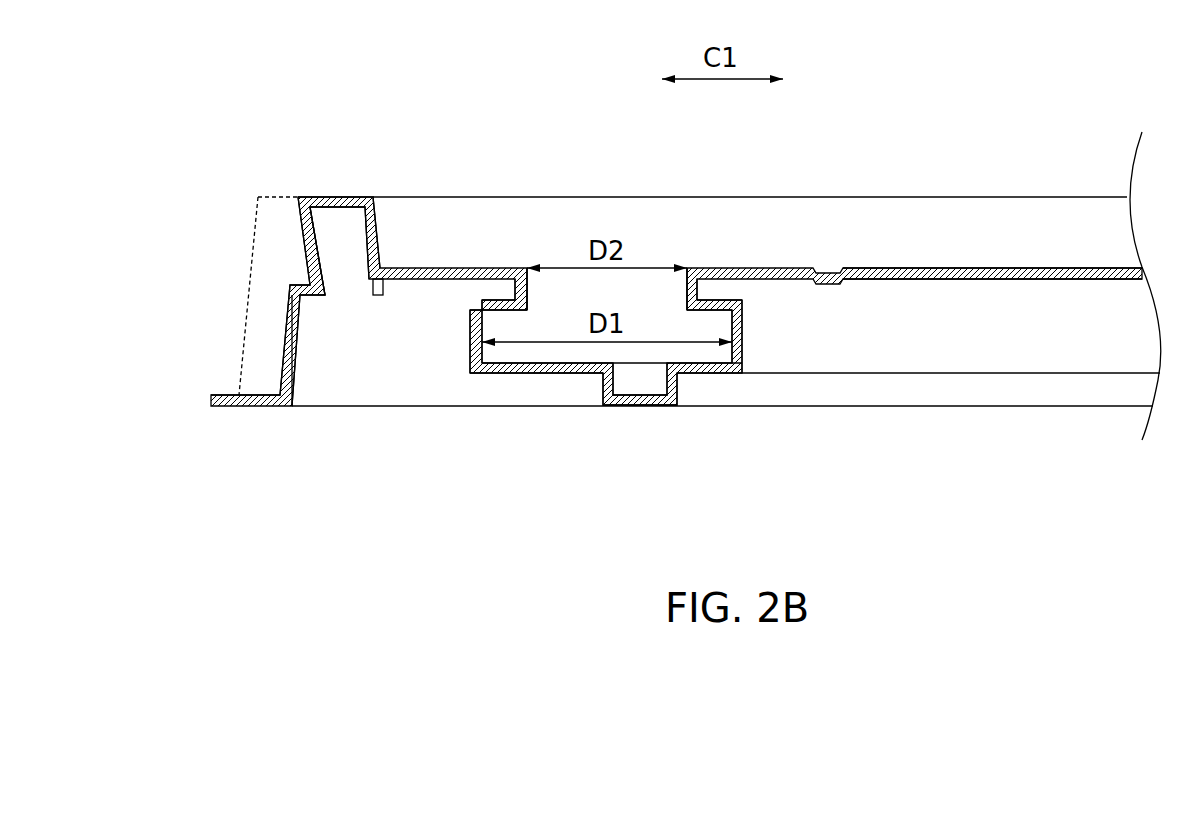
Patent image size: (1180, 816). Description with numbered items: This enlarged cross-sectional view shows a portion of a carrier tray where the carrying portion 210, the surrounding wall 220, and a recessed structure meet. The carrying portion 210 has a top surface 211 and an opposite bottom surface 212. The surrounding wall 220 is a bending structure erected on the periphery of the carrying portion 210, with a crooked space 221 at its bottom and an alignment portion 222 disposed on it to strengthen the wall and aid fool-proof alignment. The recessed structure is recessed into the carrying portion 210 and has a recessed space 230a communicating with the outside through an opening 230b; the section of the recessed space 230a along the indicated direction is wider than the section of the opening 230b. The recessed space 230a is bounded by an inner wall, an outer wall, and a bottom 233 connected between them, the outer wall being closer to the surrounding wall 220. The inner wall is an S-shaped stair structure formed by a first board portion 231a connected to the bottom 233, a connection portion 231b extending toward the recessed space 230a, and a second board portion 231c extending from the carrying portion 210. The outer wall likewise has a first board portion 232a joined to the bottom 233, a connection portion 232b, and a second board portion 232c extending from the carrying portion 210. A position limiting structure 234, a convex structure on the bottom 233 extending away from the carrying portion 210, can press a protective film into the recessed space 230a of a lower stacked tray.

The carrying portion 210 is at (743, 270).
The top surface 211 is at (923, 268).
The bottom surface 212 is at (1040, 278).
The surrounding wall 220 is at (330, 197).
The crooked space 221 is at (341, 365).
The alignment portion 222 is at (305, 245).
The recessed space 230a is at (712, 327).
The opening 230b is at (538, 252).
The first board portion 231a is at (740, 345).
The connection portion 231b is at (730, 293).
The second board portion 231c is at (702, 290).
The first board portion 232a is at (470, 352).
The connection portion 232b is at (498, 302).
The second board portion 232c is at (517, 293).
The bottom 233 is at (557, 391).
The position limiting structure 234 is at (643, 403).